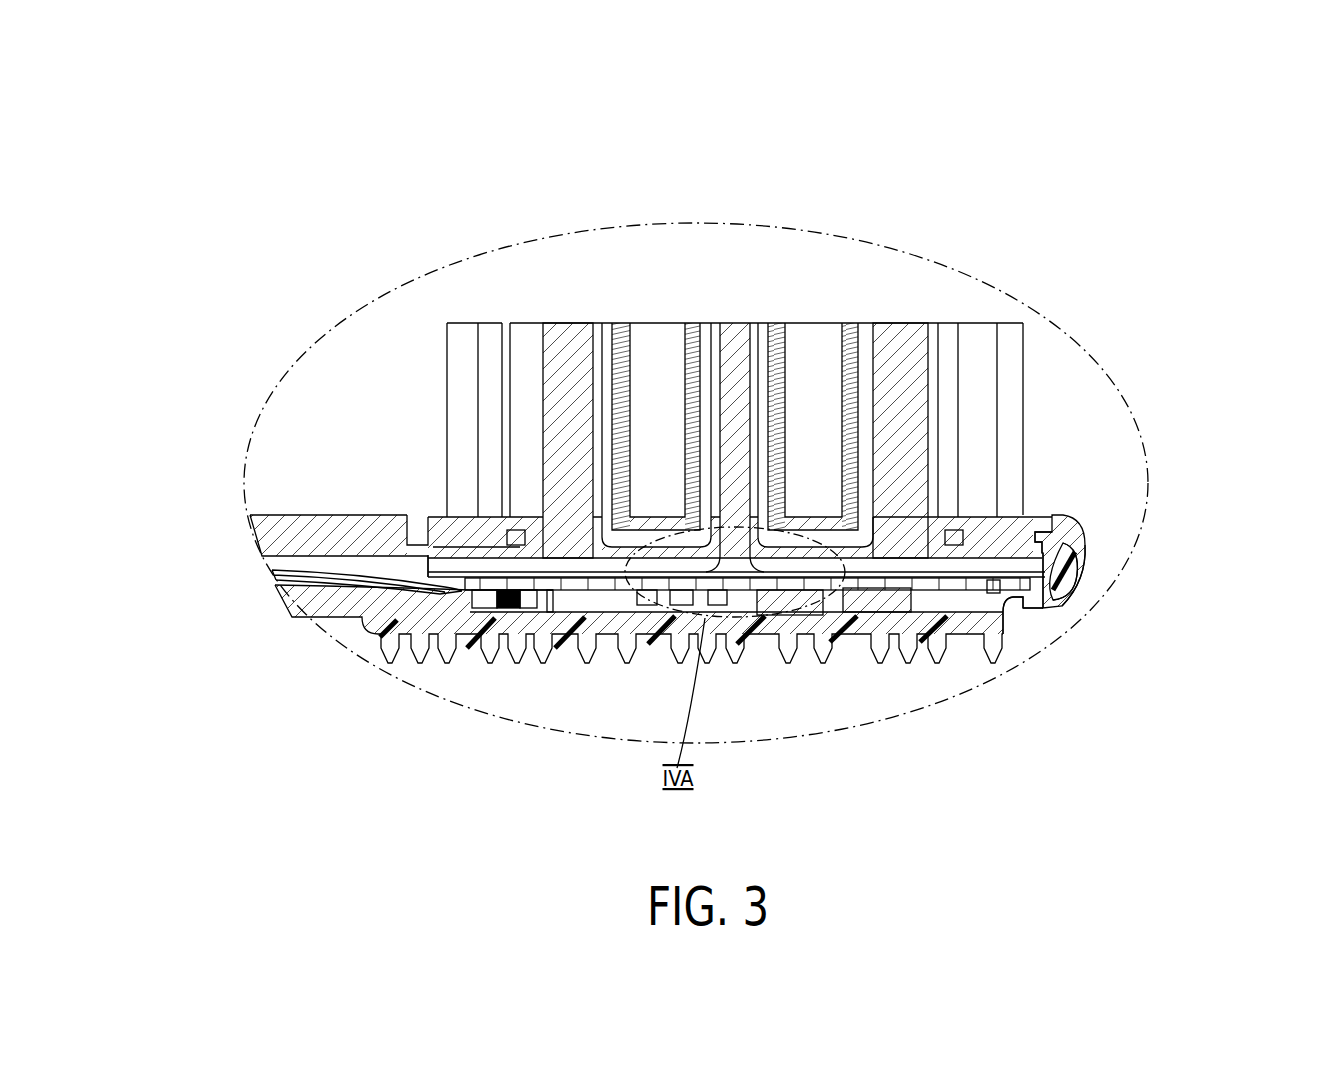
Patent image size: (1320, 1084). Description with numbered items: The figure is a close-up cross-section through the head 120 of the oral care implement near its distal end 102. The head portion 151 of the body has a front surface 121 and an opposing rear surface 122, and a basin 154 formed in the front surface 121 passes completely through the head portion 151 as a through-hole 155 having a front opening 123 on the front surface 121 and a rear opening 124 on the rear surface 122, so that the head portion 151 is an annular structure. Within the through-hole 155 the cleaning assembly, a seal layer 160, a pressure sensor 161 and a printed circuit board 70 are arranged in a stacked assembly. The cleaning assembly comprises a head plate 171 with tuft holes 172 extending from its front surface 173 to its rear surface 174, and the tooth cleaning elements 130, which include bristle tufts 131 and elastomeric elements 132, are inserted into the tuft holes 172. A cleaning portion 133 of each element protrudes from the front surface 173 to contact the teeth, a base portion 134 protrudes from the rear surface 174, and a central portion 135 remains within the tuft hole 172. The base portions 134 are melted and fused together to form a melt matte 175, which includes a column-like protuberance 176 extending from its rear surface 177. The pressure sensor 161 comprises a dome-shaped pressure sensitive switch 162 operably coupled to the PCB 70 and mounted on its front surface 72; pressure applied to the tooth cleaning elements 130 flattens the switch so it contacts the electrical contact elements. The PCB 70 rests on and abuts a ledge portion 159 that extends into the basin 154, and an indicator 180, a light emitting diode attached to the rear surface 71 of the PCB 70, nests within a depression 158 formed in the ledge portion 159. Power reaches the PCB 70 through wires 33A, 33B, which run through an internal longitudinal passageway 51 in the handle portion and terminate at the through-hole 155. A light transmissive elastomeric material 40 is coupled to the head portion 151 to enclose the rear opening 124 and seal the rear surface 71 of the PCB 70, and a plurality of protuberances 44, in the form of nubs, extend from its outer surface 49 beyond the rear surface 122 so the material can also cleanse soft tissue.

The tooth cleaning elements 130 is at (1040, 408).
The bristle tufts 131 is at (818, 347).
The elastomeric elements 132 is at (573, 330).
The cleaning portion 133 is at (560, 375).
The central portion 135 is at (573, 527).
The pressure sensor 161 is at (765, 552).
The tuft holes 172 is at (715, 433).
The head plate 171 is at (410, 517).
The front surface of the PCB 72 is at (510, 575).
The through-hole 155 is at (410, 517).
The internal longitudinal passageway 51 is at (285, 556).
The wire 33B is at (322, 558).
The wire 33A is at (292, 575).
The light transmissive elastomeric material 40 is at (350, 641).
The protuberances 44 is at (412, 648).
The melt matte 175 is at (550, 598).
The rear surface of the melt matte 177 is at (548, 553).
The rear surface of the PCB 71 is at (582, 562).
The depression 158 is at (482, 598).
The indicator 180 is at (503, 608).
The ledge portion 159 is at (522, 612).
The outer surface of the light transmissive elastomeric material 49 is at (640, 663).
The protuberance 176 is at (777, 575).
The pressure sensitive switch 162 is at (740, 565).
The printed circuit board 70 is at (833, 582).
The base portion 134 is at (938, 602).
The rear surface of the head plate 174 is at (962, 592).
The rear opening 124 is at (1002, 603).
The rear surface of the head portion 122 is at (1022, 607).
The head 120 is at (1037, 630).
The front surface of the head plate 173 is at (1063, 515).
The front opening 123 is at (1060, 540).
The front surface of the head portion 121 is at (1043, 538).
The basin 154 is at (1057, 545).
The head portion 151 is at (1082, 548).
The distal end 102 is at (1080, 580).
The seal layer 160 is at (1045, 606).